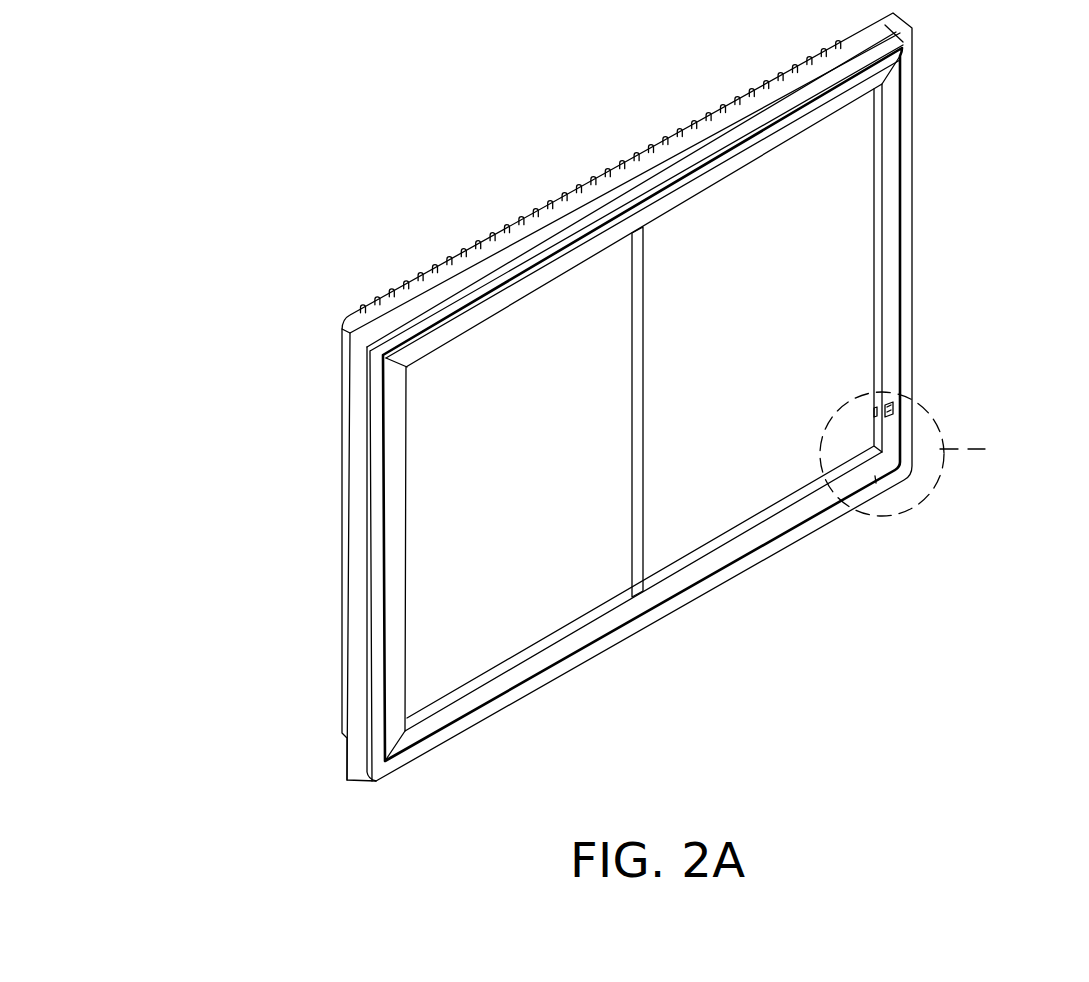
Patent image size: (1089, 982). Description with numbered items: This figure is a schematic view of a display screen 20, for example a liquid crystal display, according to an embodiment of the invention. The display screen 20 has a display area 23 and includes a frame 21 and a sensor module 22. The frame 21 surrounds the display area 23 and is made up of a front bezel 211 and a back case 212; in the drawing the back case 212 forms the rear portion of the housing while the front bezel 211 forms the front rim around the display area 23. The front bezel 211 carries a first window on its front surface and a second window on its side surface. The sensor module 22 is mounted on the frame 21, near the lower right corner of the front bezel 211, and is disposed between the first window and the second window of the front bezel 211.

The display screen 20 is at (223, 115).
The frame 21 is at (1028, 10).
The front bezel 211 is at (886, 73).
The back case 212 is at (900, 27).
The sensor module 22 is at (893, 410).
The display area 23 is at (857, 207).